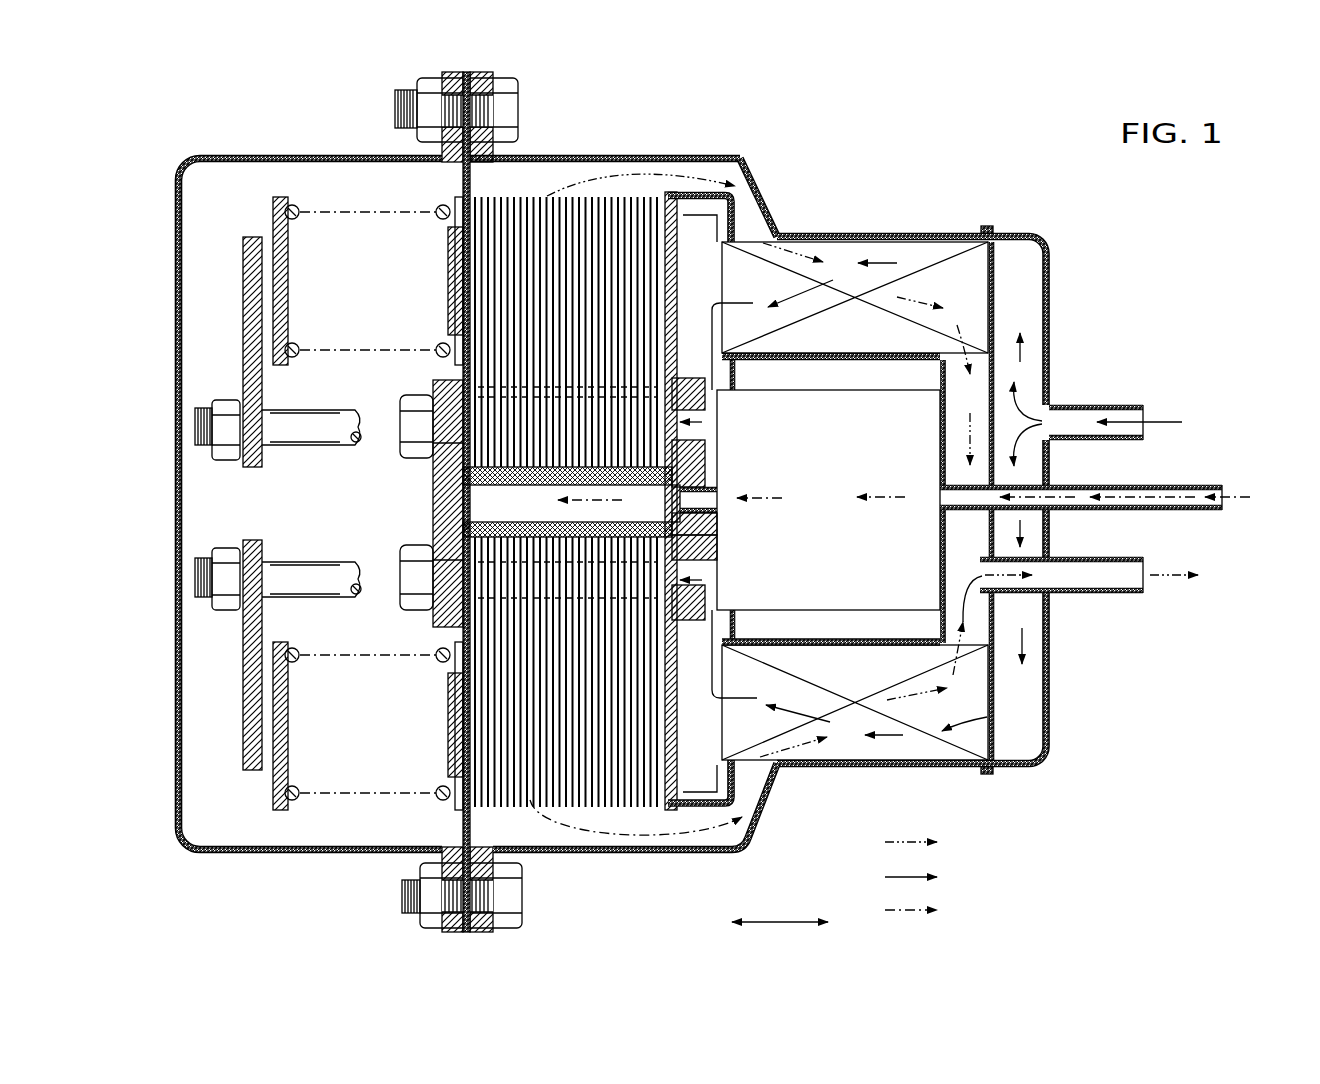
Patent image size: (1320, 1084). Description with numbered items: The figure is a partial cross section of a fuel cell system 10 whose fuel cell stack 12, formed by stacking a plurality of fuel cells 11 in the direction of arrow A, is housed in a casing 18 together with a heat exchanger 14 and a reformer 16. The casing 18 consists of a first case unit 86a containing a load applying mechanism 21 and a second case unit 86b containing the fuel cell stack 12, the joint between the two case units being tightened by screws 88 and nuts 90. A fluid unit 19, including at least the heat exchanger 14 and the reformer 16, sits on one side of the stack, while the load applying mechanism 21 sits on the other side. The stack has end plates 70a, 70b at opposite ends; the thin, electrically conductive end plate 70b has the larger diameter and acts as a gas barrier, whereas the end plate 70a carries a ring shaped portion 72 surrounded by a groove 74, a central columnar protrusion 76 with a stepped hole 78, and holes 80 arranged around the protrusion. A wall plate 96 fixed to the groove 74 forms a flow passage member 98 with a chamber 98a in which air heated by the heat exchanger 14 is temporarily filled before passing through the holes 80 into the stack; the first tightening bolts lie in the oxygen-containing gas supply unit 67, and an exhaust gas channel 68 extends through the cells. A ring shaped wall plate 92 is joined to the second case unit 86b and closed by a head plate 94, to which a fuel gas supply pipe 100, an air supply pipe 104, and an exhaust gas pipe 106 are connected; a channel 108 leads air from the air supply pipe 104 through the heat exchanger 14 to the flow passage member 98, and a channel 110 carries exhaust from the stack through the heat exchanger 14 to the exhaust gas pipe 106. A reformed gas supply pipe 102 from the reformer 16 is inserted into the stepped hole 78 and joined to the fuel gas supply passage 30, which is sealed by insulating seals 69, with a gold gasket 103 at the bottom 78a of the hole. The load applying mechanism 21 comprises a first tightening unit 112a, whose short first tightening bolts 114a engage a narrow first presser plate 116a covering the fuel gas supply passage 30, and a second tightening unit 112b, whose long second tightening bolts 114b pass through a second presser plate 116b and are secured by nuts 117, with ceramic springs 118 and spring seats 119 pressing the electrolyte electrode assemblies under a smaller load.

The fuel cell system 10 is at (1149, 201).
The fuel cell 11 is at (552, 810).
The fuel cell stack 12 is at (626, 179).
The heat exchanger 14 is at (955, 262).
The reformer 16 is at (858, 400).
The casing 18 is at (795, 214).
The fluid unit 19 is at (895, 172).
The load applying mechanism 21 is at (373, 502).
The fuel gas supply passage 30 is at (478, 500).
The oxygen-containing gas supply unit 67 is at (690, 431).
The exhaust gas channel 68 is at (643, 827).
The insulating seal 69 is at (570, 502).
The end plate 70a is at (674, 278).
The end plate 70b is at (464, 826).
The ring shaped portion 72 is at (757, 836).
The groove 74 is at (707, 737).
The columnar protrusion 76 is at (712, 521).
The stepped hole 78 is at (712, 532).
The bottom of stepped hole 78a is at (676, 491).
The hole 80 is at (677, 563).
The first case unit 86a is at (282, 155).
The second case unit 86b is at (600, 152).
The screw 88 is at (500, 110).
The nut 90 is at (400, 108).
The ring shaped wall plate 92 is at (842, 768).
The head plate 94 is at (1051, 681).
The wall plate 96 is at (742, 214).
The flow passage member 98 is at (744, 196).
The chamber 98a is at (736, 805).
The fuel gas supply pipe 100 is at (1182, 485).
The reformed gas supply pipe 102 is at (722, 498).
The gold gasket 103 is at (686, 471).
The air supply pipe 104 is at (1100, 405).
The exhaust gas pipe 106 is at (1110, 593).
The channel 108 is at (941, 271).
The channel 110 is at (881, 696).
The first tightening unit 112a is at (430, 527).
The second tightening unit 112b is at (272, 612).
The first tightening bolt 114a is at (403, 423).
The second tightening bolt 114b is at (194, 427).
The first presser plate 116a is at (446, 481).
The second presser plate 116b is at (243, 333).
The nut 117 is at (228, 556).
The spring 118 is at (292, 801).
The spring seat 119 is at (274, 793).